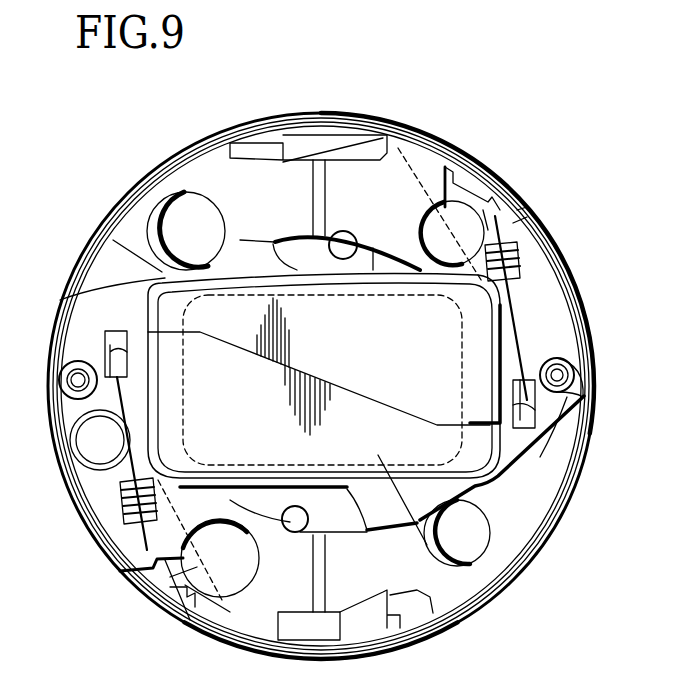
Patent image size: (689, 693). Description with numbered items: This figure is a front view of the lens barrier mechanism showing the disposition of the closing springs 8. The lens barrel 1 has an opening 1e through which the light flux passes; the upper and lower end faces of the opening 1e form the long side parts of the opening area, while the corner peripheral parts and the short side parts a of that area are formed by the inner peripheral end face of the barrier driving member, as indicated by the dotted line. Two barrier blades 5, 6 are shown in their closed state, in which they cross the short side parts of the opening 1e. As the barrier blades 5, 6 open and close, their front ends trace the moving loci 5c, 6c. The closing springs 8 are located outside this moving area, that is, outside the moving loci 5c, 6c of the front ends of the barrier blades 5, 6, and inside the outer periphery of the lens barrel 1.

The lens barrel 1 is at (356, 130).
The opening 1e is at (470, 457).
The barrier blade 5 is at (177, 313).
The moving locus 5c is at (423, 170).
The barrier blade 6 is at (492, 585).
The moving locus 6c is at (200, 590).
The closing spring 8 is at (512, 258).
The short side part a is at (455, 332).